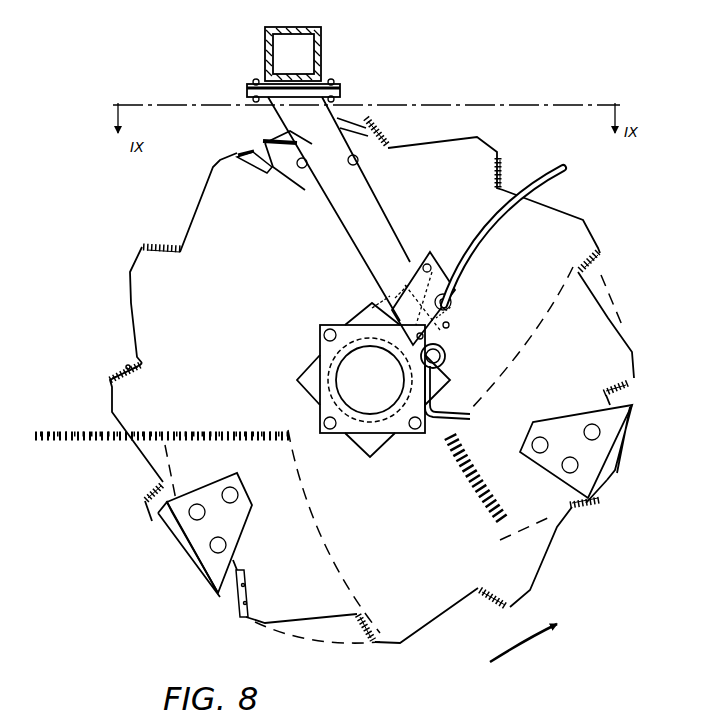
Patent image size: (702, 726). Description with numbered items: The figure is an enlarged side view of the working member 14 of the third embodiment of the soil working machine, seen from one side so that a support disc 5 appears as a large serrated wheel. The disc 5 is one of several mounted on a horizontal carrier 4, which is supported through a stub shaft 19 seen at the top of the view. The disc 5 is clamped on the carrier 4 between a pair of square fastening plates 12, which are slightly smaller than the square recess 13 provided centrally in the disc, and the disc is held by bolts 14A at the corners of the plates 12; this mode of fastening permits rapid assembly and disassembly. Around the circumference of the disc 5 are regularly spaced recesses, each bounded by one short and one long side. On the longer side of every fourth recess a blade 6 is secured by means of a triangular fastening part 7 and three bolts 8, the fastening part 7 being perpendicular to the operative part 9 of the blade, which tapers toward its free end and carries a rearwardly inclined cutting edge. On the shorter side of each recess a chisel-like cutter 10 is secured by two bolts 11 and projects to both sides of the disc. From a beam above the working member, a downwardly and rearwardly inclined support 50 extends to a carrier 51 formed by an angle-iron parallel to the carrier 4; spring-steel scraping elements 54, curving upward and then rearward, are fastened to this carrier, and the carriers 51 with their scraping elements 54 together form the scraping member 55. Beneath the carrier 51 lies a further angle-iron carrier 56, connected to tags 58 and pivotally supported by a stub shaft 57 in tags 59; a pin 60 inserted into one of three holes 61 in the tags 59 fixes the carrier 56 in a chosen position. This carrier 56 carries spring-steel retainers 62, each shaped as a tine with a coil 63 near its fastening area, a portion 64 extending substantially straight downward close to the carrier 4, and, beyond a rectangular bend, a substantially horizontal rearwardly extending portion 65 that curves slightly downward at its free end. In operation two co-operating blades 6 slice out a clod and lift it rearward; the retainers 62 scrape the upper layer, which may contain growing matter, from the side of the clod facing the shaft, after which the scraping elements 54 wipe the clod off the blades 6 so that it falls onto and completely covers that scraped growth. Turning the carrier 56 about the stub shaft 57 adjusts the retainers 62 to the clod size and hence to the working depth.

The carrier 4 is at (340, 436).
The support disc 5 is at (137, 318).
The blade 6 is at (272, 138).
The triangular fastening part 7 is at (315, 198).
The bolt 8 is at (300, 165).
The operative part 9 is at (365, 115).
The cutter 10 is at (495, 165).
The bolt 11 is at (392, 132).
The square fastening plate 12 is at (320, 390).
The square recess 13 is at (307, 365).
The working member 14 is at (233, 622).
The bolt 14A is at (322, 334).
The stub shaft 19 is at (262, 40).
The support 50 is at (350, 226).
The carrier 51 is at (381, 297).
The scraping element 54 is at (508, 212).
The scraping member 55 is at (483, 212).
The carrier 56 is at (396, 360).
The stub shaft 57 is at (460, 293).
The tag 58 is at (455, 290).
The tag 59 is at (410, 276).
The pin 60 is at (436, 255).
The hole 61 is at (387, 285).
The retainer 62 is at (437, 432).
The coil 63 is at (447, 356).
The portion 64 is at (425, 392).
The portion 65 is at (468, 414).